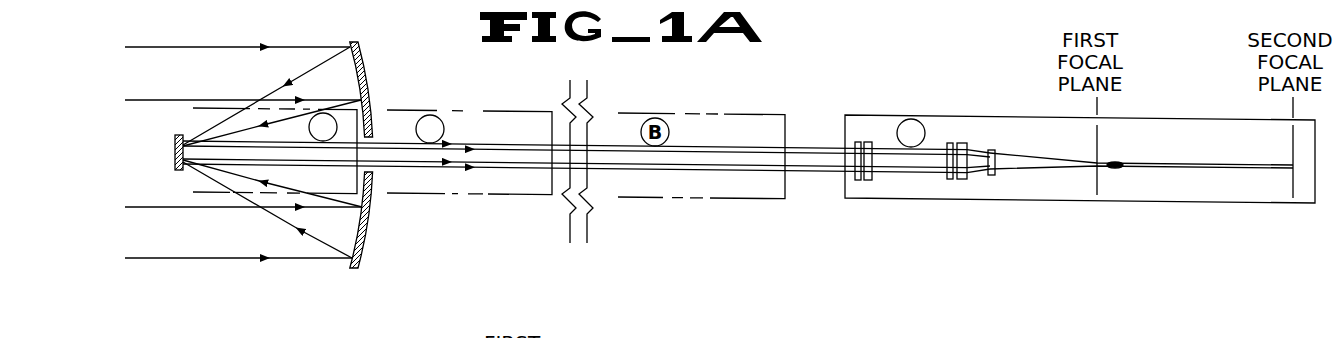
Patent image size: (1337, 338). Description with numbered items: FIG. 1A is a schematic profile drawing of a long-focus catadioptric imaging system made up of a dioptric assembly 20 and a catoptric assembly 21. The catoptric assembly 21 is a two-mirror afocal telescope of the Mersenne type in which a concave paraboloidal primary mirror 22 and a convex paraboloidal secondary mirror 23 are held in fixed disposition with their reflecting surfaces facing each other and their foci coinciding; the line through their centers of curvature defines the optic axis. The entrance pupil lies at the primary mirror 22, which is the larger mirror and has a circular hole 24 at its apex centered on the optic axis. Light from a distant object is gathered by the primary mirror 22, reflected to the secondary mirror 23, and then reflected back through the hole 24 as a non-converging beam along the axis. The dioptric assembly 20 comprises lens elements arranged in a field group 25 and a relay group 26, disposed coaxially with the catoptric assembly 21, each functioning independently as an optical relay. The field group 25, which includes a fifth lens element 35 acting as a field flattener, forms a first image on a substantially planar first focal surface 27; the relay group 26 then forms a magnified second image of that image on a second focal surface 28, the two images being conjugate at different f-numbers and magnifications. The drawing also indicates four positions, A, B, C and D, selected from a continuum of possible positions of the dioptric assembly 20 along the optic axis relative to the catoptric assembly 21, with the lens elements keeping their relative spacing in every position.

The dioptric assembly 20 is at (1079, 220).
The catoptric assembly 21 is at (291, 190).
The primary mirror 22 is at (369, 97).
The secondary mirror 23 is at (184, 136).
The circular hole 24 is at (389, 140).
The field group 25 is at (1002, 215).
The relay group 26 is at (1143, 215).
The first focal surface 27 is at (1099, 147).
The second focal surface 28 is at (1290, 133).
The fifth lens element 35 is at (995, 150).